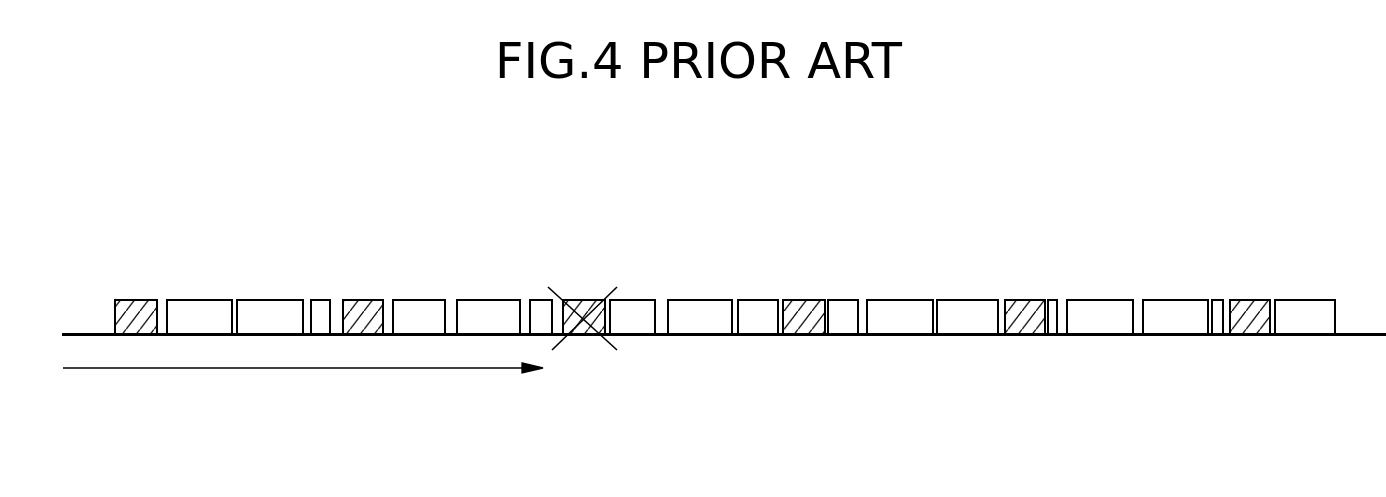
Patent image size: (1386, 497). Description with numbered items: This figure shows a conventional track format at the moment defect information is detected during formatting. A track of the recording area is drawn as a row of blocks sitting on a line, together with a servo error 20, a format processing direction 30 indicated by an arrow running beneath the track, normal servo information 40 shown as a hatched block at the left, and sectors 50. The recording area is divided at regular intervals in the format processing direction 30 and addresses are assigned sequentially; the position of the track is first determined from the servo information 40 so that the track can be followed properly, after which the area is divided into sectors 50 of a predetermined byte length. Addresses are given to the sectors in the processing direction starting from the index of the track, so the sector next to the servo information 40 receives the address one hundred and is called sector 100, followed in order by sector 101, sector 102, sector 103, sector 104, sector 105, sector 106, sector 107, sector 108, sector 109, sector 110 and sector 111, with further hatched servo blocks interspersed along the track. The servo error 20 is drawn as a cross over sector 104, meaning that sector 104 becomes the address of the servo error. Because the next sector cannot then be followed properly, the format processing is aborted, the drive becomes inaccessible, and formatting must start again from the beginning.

The servo error 20 is at (588, 337).
The format processing direction 30 is at (298, 372).
The normal servo information 40 is at (132, 300).
The sectors 50 is at (215, 312).
The sector 100 is at (199, 298).
The sector 101 is at (270, 298).
The sector 102 is at (376, 298).
The sector 103 is at (488, 298).
The sector 104 is at (592, 298).
The sector 105 is at (700, 298).
The sector 106 is at (798, 298).
The sector 107 is at (900, 298).
The sector 108 is at (997, 298).
The sector 109 is at (1100, 298).
The sector 110 is at (1175, 298).
The sector 111 is at (1268, 298).